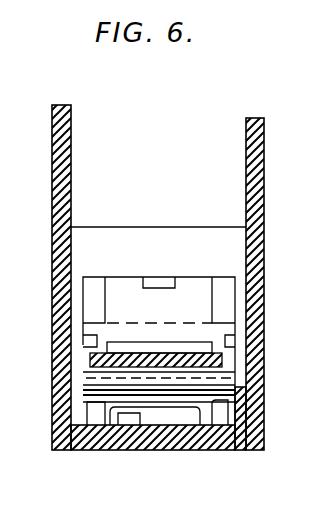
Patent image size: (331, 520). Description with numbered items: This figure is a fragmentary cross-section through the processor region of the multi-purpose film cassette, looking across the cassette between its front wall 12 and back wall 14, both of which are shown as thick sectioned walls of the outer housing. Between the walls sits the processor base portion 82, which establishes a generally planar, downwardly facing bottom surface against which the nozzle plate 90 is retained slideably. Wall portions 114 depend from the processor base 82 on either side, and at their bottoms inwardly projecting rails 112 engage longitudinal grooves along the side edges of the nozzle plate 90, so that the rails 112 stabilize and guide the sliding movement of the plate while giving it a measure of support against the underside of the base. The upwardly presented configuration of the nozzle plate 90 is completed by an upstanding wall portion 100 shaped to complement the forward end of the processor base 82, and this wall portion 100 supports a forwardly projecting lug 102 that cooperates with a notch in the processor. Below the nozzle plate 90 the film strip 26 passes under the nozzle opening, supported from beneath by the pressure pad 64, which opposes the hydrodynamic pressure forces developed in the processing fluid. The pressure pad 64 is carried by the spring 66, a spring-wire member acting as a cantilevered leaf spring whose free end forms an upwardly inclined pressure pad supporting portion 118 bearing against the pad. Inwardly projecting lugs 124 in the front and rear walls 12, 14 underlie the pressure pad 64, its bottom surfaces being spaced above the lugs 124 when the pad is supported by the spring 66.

The front wall 12 is at (62, 190).
The back wall 14 is at (257, 197).
The film strip 26 is at (210, 368).
The pressure pad 64 is at (92, 390).
The spring 66 is at (192, 412).
The base portion 82 is at (148, 238).
The nozzle plate 90 is at (224, 298).
The upstanding wall portion 100 is at (185, 315).
The forwardly projecting lug 102 is at (152, 282).
The inwardly projecting rails 112 is at (84, 343).
The wall portions 114 is at (66, 288).
The pressure pad supporting portion 118 is at (130, 430).
The inwardly projecting lugs 124 is at (98, 428).